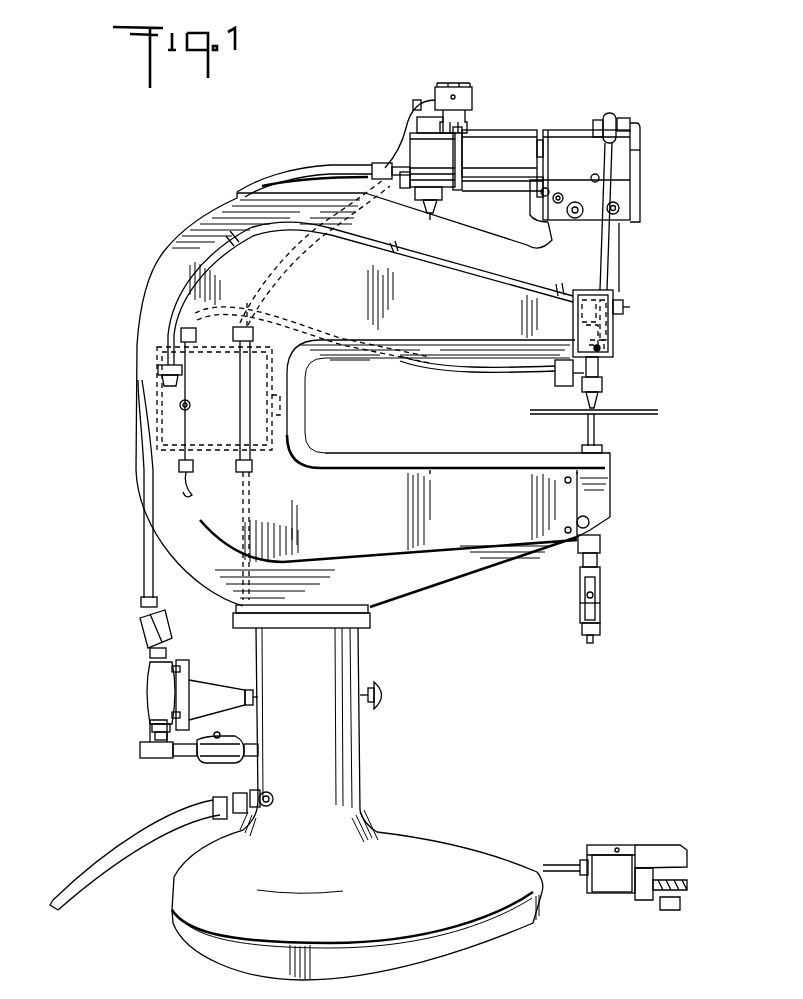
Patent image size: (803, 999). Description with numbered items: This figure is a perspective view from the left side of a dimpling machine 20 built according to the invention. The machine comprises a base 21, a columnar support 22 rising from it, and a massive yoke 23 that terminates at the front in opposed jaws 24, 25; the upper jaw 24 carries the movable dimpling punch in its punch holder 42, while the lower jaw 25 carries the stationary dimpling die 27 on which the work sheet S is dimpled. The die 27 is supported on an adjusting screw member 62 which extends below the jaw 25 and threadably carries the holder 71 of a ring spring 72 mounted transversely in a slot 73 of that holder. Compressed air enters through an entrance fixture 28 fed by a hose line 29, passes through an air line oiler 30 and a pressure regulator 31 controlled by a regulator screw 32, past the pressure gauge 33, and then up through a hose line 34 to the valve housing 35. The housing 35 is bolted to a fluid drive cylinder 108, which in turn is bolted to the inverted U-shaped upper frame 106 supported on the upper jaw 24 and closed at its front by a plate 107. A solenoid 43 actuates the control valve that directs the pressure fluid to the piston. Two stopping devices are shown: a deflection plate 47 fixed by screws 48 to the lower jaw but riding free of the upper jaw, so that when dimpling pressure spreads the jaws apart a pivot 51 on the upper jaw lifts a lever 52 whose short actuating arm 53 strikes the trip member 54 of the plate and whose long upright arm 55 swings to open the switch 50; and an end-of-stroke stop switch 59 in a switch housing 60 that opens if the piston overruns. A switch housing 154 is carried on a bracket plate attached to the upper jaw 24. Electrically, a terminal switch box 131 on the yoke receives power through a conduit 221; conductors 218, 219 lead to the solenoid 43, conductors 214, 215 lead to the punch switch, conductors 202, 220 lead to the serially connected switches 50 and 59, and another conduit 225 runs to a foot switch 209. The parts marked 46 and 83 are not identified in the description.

The dimpling machine 20 is at (180, 230).
The hose line 34 is at (288, 180).
The solenoid 43 is at (471, 101).
The valve housing 35 is at (441, 158).
The fluid drive cylinder 108 is at (515, 158).
The upper frame 106 is at (597, 161).
The plate 107 is at (641, 167).
The switch housing 60 is at (609, 113).
The stop switch 59 is at (628, 118).
The conductor 202 is at (343, 224).
The conductor 220 is at (325, 219).
The conductor 218 is at (331, 298).
The conductor 219 is at (310, 290).
The deflection plate 47 is at (452, 314).
The deflection trip switch 50 is at (584, 290).
The trip member 54 is at (584, 318).
The short actuating arm 53 is at (584, 338).
The upright arm 55 is at (612, 322).
The lever 52 is at (614, 332).
The pivot 51 is at (605, 345).
The electrode clamp 46 is at (610, 377).
The punch holder 42 is at (603, 393).
The switch housing 154 is at (555, 380).
The upper jaw 24 is at (478, 358).
The conductor 214 is at (382, 378).
The conductor 215 is at (382, 396).
The sheet metal S is at (620, 411).
The stationary dimpling die 27 is at (597, 423).
The adjusting screw member 62 is at (603, 448).
The lower jaw 25 is at (448, 462).
The screws 48 is at (566, 527).
The yoke 23 is at (145, 386).
The terminal switch box 131 is at (157, 405).
The conduit 221 is at (188, 494).
The conduit 225 is at (255, 496).
The holder 71 is at (600, 571).
The slot 73 is at (598, 591).
The ring spring 72 is at (600, 603).
The adjusting nut 83 is at (600, 646).
The pressure gauge 33 is at (148, 631).
The pressure regulator 31 is at (150, 698).
The regulator screw 32 is at (379, 690).
The air line oiler 30 is at (218, 763).
The entrance fixture 28 is at (262, 792).
The hose line 29 is at (115, 840).
The columnar support 22 is at (360, 784).
The base 21 is at (436, 851).
The foot switch 209 is at (660, 840).